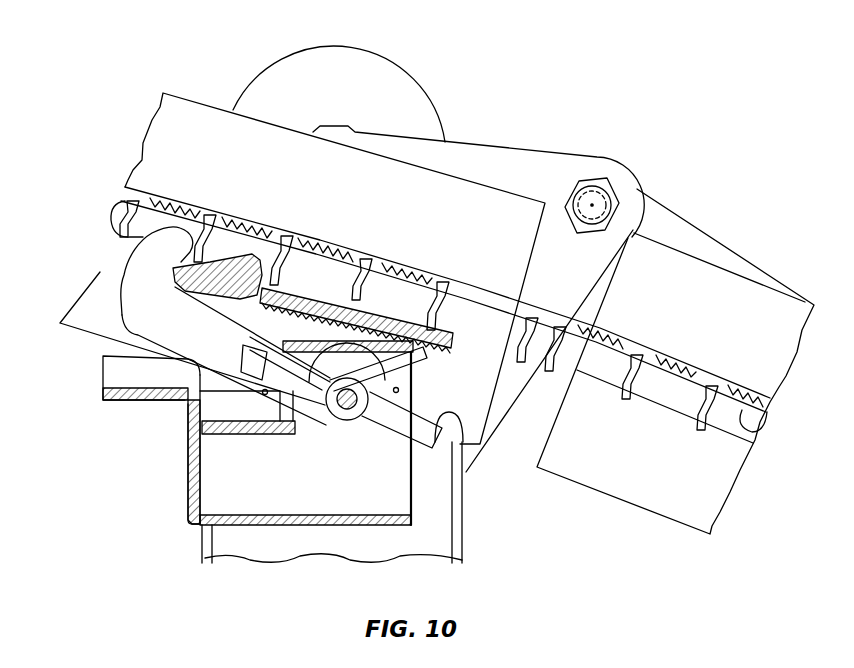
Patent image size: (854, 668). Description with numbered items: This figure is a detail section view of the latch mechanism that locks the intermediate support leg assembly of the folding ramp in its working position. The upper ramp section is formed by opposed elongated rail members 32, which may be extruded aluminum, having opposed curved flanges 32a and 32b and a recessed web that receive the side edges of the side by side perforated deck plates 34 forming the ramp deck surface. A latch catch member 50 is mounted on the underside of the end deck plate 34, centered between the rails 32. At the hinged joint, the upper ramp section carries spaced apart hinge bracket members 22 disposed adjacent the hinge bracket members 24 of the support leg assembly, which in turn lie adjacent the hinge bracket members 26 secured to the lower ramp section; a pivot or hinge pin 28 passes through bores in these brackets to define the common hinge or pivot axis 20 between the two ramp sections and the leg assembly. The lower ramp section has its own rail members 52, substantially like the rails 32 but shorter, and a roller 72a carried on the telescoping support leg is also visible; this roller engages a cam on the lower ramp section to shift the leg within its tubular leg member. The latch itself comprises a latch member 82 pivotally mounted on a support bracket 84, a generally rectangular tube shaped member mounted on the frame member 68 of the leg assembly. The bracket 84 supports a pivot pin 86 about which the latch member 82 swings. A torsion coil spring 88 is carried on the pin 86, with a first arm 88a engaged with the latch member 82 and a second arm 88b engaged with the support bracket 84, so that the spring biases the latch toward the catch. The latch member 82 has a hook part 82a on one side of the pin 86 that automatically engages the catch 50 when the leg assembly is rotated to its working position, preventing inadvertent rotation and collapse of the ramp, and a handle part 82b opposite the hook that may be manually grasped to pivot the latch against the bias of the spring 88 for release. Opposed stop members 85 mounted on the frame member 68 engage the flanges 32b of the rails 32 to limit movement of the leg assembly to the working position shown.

The common hinge or pivot axis 20 is at (597, 186).
The hinge bracket members 22 is at (540, 160).
The hinge bracket members 24 is at (536, 392).
The hinge bracket members 26 is at (717, 250).
The pivot or hinge pin 28 is at (632, 190).
The rail members 32 is at (100, 263).
The curved flange 32a is at (512, 148).
The curved flange 32b is at (87, 347).
The perforated deck plates 34 is at (118, 217).
The latch catch member 50 is at (257, 222).
The rail members 52 is at (684, 248).
The frame member 68 is at (288, 452).
The roller 72a is at (385, 55).
The latch member 82 is at (150, 331).
The hook part 82a is at (88, 280).
The handle part 82b is at (464, 447).
The support bracket 84 is at (366, 521).
The stop members 85 is at (100, 374).
The pivot pin 86 is at (340, 422).
The torsion coil spring 88 is at (305, 424).
The first arm 88a is at (265, 395).
The second arm 88b is at (377, 421).